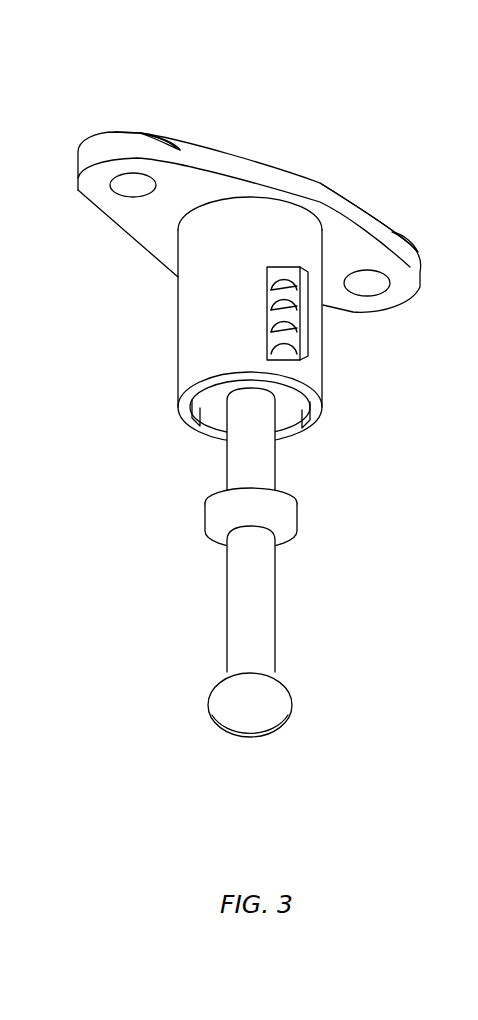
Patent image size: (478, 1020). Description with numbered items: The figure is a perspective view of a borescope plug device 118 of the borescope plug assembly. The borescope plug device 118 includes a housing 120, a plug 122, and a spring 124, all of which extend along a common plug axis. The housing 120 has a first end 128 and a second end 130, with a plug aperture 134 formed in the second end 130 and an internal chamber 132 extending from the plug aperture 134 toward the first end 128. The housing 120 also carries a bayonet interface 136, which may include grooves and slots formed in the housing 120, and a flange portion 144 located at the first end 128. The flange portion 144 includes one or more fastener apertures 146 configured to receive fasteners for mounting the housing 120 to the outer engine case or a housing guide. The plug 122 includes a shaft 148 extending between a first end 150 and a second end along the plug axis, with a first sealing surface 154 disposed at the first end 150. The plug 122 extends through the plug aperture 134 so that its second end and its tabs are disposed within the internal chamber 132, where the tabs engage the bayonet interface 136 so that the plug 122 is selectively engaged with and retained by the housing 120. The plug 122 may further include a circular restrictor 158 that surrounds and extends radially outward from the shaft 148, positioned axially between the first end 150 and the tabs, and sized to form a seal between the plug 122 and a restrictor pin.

The borescope plug device 118 is at (327, 121).
The housing 120 is at (197, 128).
The plug 122 is at (207, 609).
The spring 124 is at (298, 317).
The first end 128 is at (232, 158).
The second end 130 is at (318, 414).
The internal chamber 132 is at (300, 428).
The plug aperture 134 is at (172, 404).
The bayonet interface 136 is at (195, 449).
The flange portion 144 is at (353, 230).
The fastener apertures 146 is at (127, 196).
The shaft 148 is at (275, 602).
The first end 150 is at (237, 748).
The first sealing surface 154 is at (286, 743).
The circular restrictor 158 is at (306, 532).